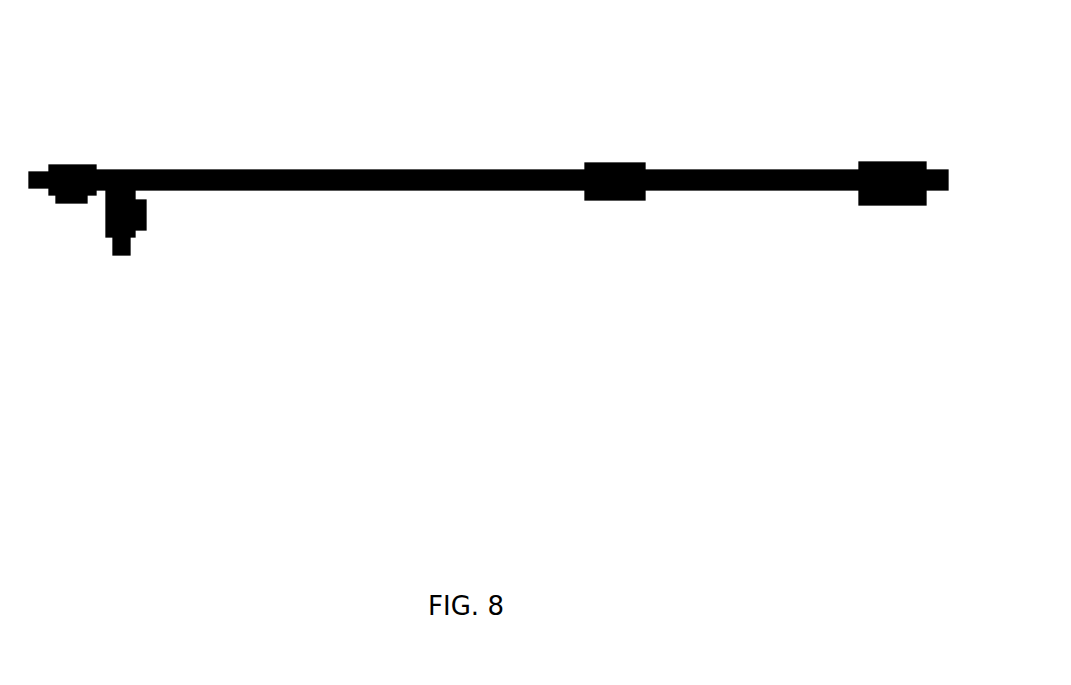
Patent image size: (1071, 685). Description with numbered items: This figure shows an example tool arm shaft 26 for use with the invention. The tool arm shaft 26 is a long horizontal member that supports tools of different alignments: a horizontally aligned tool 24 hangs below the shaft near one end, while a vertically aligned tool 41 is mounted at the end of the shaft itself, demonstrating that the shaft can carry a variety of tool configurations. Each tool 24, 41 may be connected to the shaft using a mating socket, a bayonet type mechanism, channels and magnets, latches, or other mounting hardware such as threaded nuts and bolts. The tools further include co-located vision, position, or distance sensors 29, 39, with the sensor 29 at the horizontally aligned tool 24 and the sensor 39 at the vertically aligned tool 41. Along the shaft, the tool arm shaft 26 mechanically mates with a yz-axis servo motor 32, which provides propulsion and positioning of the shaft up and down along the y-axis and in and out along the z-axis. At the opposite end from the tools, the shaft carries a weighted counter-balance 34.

The tool 24 is at (135, 237).
The tool arm shaft 26 is at (367, 170).
The vision/position/distance sensor 29 is at (146, 218).
The yz-axis servo motor 32 is at (610, 163).
The weighted counter-balance 34 is at (908, 162).
The vision/position/distance sensor 39 is at (57, 200).
The tool 41 is at (61, 165).